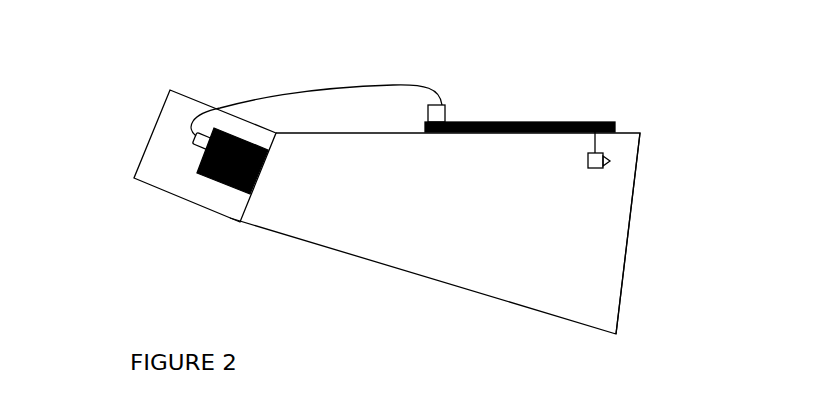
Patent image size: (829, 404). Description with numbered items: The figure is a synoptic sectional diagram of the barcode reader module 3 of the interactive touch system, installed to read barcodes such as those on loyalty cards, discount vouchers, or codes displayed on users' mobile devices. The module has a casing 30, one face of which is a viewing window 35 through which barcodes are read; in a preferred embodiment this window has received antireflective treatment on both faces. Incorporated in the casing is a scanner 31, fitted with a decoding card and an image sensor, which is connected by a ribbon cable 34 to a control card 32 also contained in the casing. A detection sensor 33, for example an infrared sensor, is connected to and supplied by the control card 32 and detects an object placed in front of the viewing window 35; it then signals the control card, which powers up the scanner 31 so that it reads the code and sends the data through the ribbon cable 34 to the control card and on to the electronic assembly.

The barcode reader module 3 is at (157, 233).
The casing 30 is at (423, 277).
The scanner 31 is at (250, 194).
The control card 32 is at (512, 122).
The detection sensor 33 is at (600, 162).
The ribbon cable 34 is at (335, 88).
The viewing window 35 is at (627, 258).